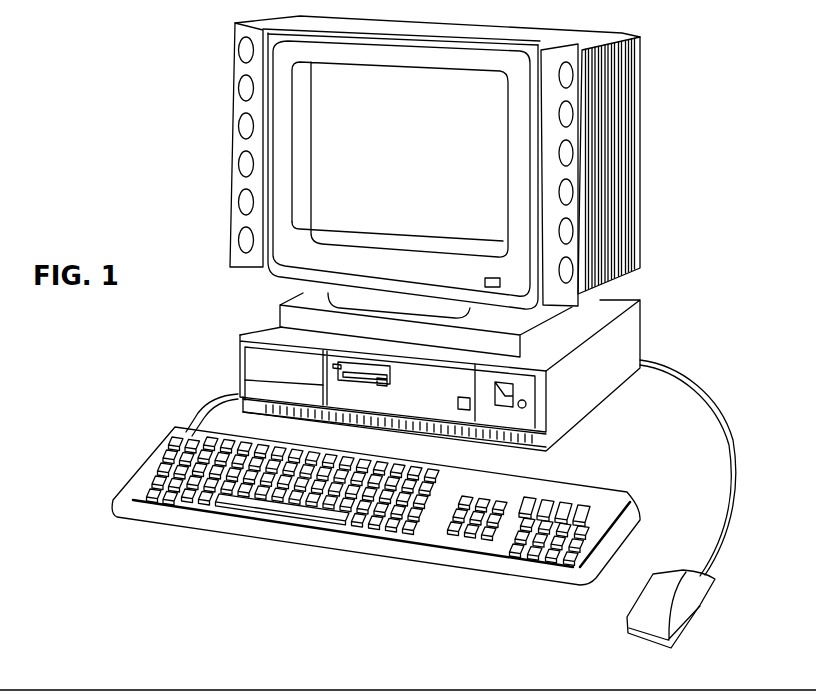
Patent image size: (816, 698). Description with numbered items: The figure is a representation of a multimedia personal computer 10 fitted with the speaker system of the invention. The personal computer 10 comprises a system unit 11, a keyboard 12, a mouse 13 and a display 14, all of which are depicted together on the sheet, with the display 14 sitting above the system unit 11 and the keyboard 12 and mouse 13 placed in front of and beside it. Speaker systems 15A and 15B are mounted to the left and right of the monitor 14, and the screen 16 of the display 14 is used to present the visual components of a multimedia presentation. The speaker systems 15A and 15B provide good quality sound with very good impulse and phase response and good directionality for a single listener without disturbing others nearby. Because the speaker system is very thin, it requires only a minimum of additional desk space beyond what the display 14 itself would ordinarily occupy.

The personal computer 10 is at (140, 181).
The system unit 11 is at (240, 355).
The keyboard 12 is at (139, 520).
The mouse 13 is at (707, 606).
The display 14 is at (570, 40).
The speaker system 15A is at (232, 147).
The speaker system 15B is at (577, 173).
The screen 16 is at (372, 181).